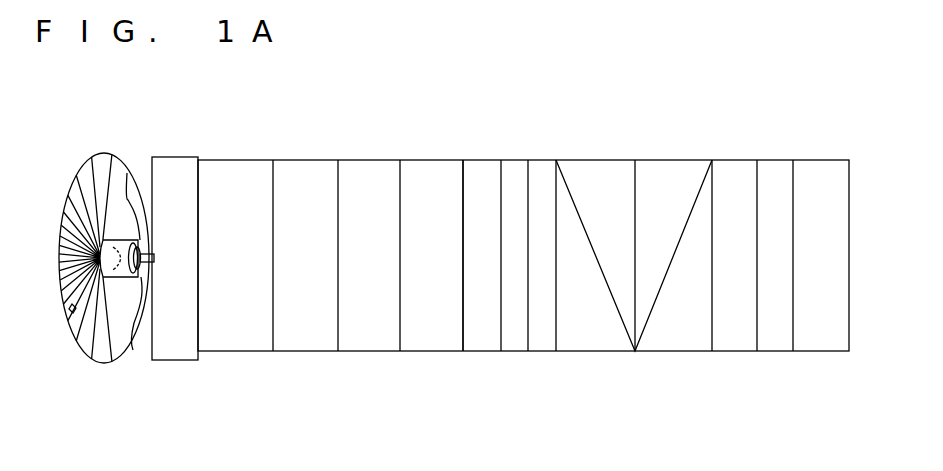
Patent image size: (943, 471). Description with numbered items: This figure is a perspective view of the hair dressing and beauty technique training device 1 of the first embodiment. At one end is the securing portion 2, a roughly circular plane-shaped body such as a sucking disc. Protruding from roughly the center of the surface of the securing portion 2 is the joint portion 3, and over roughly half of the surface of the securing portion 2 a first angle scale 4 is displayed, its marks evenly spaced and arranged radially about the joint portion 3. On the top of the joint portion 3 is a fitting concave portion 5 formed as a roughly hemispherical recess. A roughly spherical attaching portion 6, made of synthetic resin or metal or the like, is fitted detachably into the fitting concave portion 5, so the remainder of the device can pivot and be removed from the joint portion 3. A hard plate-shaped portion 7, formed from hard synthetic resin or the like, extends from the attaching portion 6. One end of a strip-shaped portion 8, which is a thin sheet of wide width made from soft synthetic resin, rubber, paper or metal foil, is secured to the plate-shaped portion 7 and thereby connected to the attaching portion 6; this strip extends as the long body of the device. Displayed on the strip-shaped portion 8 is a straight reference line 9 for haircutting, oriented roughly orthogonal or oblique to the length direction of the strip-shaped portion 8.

The hair dressing and beauty technique training device 1 is at (641, 106).
The securing portion 2 is at (118, 160).
The joint portion 3 is at (117, 278).
The first angle scale 4 is at (73, 313).
The fitting concave portion 5 is at (133, 350).
The attaching portion 6 is at (127, 173).
The plate-shaped portion 7 is at (180, 168).
The strip-shaped portion 8 is at (363, 160).
The reference line 9 is at (463, 190).